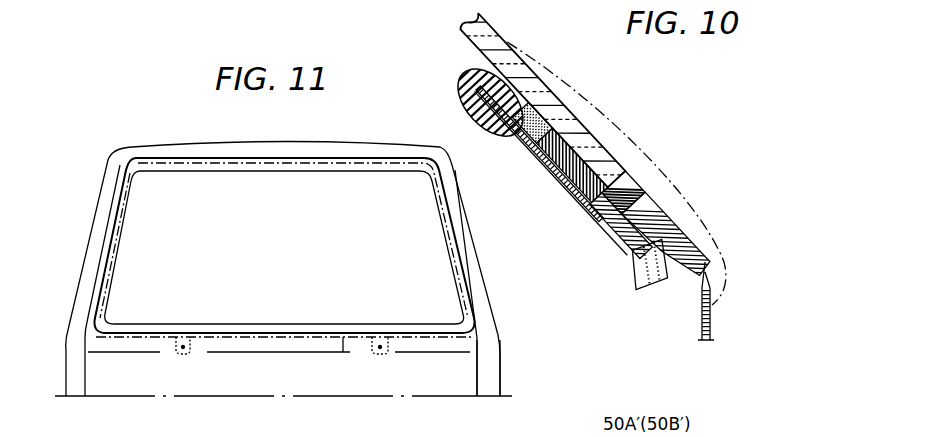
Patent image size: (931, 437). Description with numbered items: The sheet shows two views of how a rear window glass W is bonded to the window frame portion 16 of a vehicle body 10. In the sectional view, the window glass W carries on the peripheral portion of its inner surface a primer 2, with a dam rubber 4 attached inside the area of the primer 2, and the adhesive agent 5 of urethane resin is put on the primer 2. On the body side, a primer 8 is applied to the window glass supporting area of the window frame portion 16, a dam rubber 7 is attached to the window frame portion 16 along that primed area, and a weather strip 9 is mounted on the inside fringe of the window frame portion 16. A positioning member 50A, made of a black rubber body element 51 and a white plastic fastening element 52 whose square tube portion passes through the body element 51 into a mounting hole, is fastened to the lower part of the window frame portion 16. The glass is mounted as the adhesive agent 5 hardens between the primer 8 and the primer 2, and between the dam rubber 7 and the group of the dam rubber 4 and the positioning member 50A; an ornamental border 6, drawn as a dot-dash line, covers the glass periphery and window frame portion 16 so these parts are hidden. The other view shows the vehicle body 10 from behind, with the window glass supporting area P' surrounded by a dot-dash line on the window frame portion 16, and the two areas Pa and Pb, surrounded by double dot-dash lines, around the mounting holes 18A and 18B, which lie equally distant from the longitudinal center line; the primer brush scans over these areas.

In FIG. 11, the vehicle body 10 is at (168, 147).
In FIG. 11, the window frame portion 16 is at (486, 346).
In FIG. 10, the window frame portion 16 is at (710, 290).
In FIG. 11, the mounting hole 18A is at (183, 356).
In FIG. 11, the mounting hole 18B is at (386, 356).
In FIG. 11, the area surrounding mounting hole Pa is at (177, 351).
In FIG. 11, the area surrounding mounting hole Pb is at (392, 352).
In FIG. 11, the window glass supporting area P' is at (343, 369).
In FIG. 10, the window glass W is at (496, 30).
In FIG. 10, the ornamental border 6 is at (549, 60).
In FIG. 10, the weather strip 9 is at (462, 82).
In FIG. 10, the dam rubber 4 is at (538, 160).
In FIG. 10, the primer 2 is at (577, 148).
In FIG. 10, the adhesive agent 5 is at (573, 186).
In FIG. 10, the dam rubber 7 is at (627, 183).
In FIG. 10, the primer 8 is at (591, 210).
In FIG. 10, the body element 51 is at (626, 182).
In FIG. 10, the fastening element 52 is at (688, 237).
In FIG. 10, the positioning member 50A is at (678, 205).